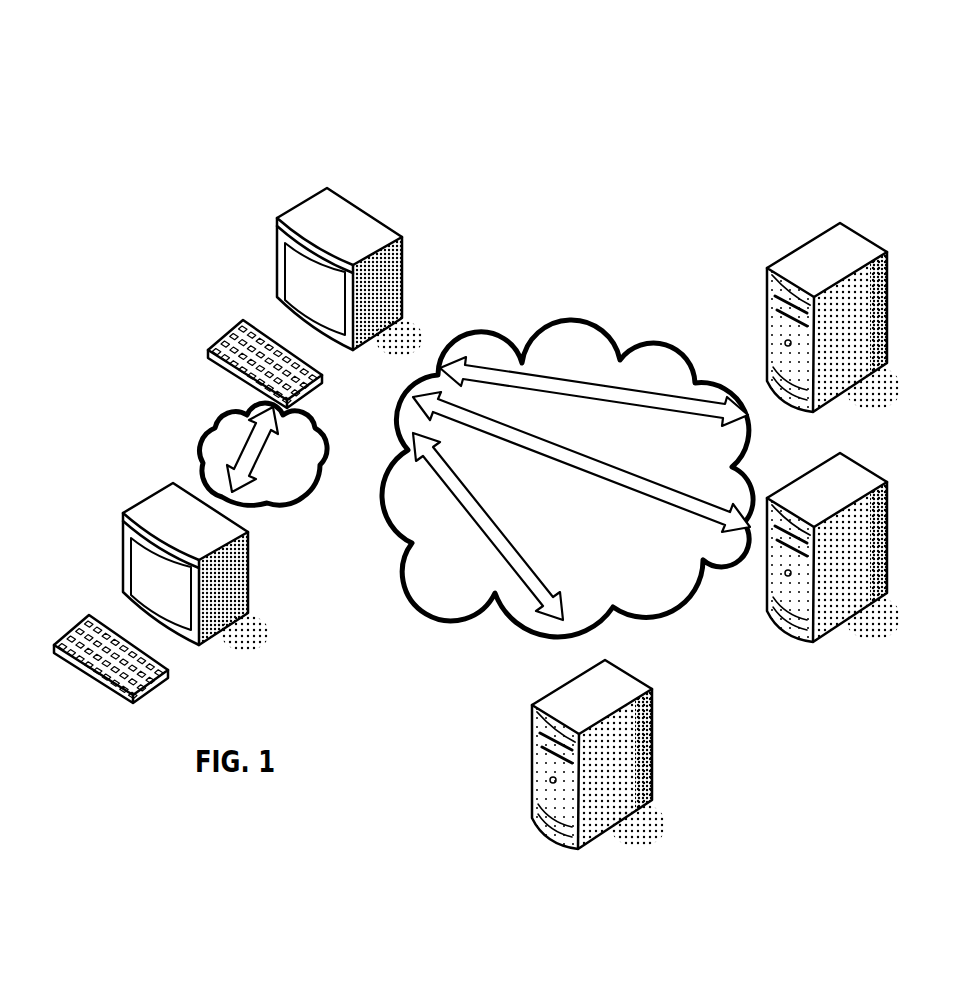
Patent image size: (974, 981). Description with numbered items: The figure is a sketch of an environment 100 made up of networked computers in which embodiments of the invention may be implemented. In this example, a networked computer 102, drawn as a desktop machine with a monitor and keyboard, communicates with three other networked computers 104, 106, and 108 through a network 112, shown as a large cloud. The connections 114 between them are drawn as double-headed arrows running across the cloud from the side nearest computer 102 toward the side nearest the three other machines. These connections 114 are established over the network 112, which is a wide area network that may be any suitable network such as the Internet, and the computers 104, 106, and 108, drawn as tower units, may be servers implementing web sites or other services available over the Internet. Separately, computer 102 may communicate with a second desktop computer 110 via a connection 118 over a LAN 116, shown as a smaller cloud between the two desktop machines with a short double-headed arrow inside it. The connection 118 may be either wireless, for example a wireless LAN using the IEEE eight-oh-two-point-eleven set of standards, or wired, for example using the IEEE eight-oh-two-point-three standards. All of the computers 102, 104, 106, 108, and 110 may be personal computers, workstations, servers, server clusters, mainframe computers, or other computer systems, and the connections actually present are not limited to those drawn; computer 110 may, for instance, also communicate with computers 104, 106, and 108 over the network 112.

The environment 100 is at (250, 127).
The networked computer 102 is at (318, 190).
The networked computer 104 is at (866, 237).
The networked computer 106 is at (887, 500).
The networked computer 108 is at (633, 675).
The computer 110 is at (133, 510).
The network 112 is at (592, 320).
The connections 114 is at (471, 352).
The LAN 116 is at (222, 413).
The connection 118 is at (270, 477).